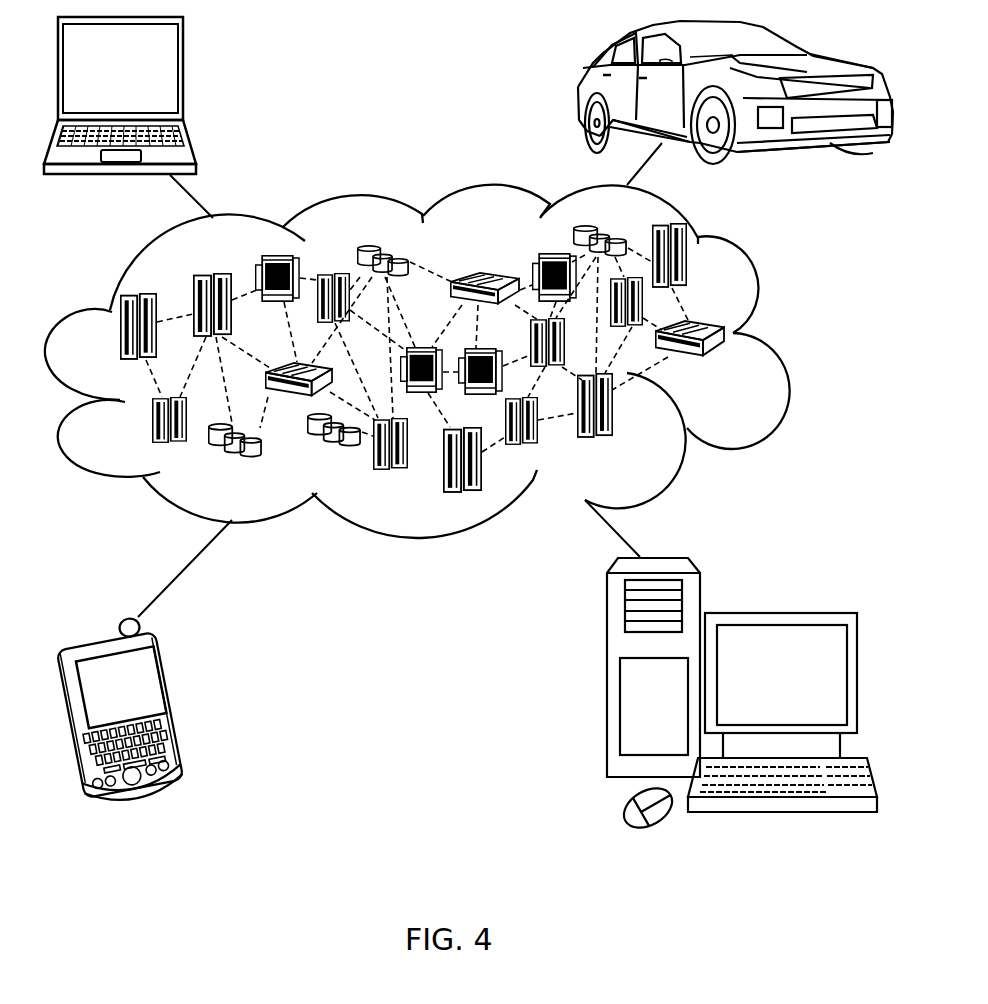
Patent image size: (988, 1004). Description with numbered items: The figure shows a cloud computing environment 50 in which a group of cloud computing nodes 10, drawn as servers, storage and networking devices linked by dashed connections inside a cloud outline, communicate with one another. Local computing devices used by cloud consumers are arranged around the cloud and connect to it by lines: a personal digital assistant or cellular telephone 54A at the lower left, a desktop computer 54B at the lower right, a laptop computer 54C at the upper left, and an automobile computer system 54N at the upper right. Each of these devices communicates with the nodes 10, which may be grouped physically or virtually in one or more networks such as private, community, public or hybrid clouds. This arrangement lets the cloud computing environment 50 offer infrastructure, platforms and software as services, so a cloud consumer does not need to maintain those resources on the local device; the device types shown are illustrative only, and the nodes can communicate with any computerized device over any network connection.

The laptop computer 54C is at (183, 77).
The automobile computer system 54N is at (580, 88).
The personal digital assistant or cellular telephone 54A is at (173, 702).
The desktop computer 54B is at (778, 613).
The cloud computing environment 50 is at (782, 338).
The cloud computing nodes 10 is at (727, 370).